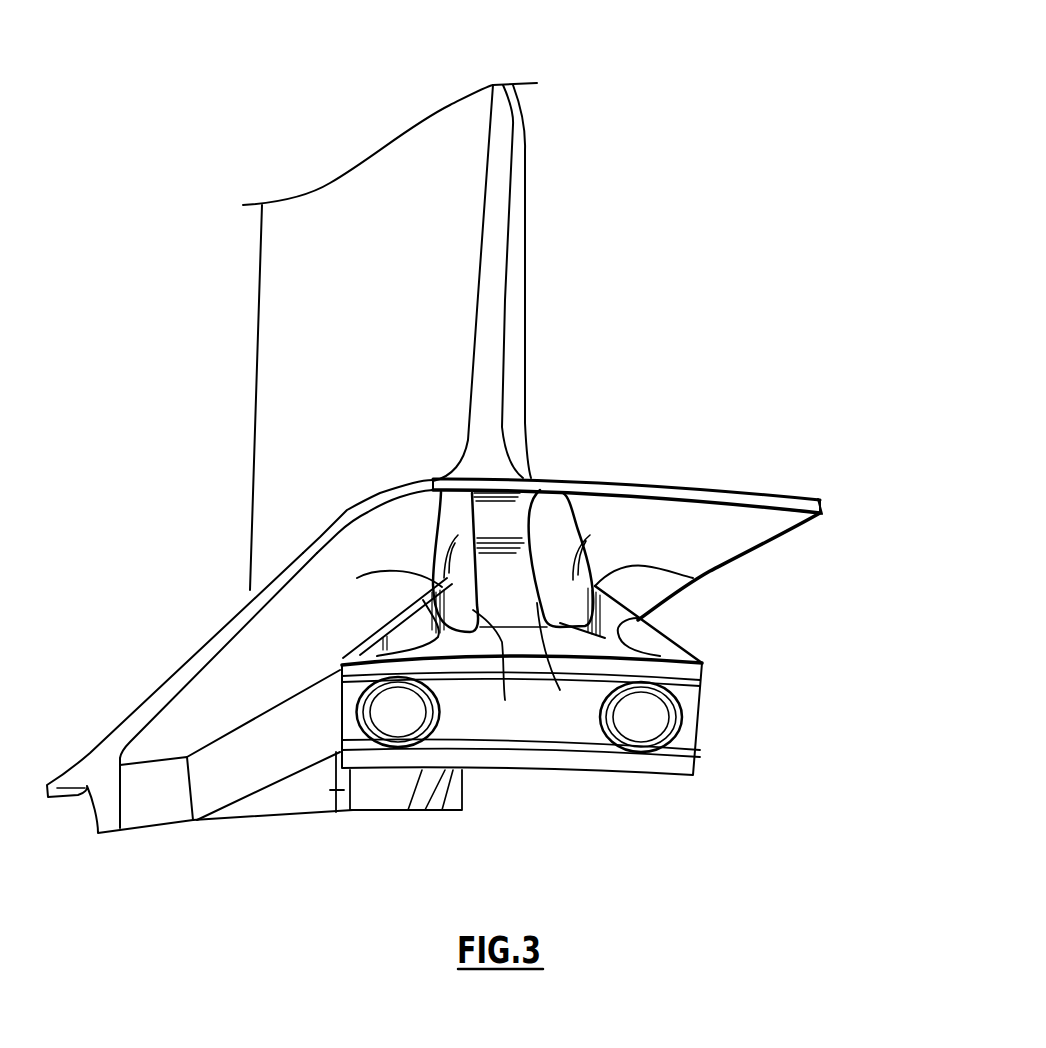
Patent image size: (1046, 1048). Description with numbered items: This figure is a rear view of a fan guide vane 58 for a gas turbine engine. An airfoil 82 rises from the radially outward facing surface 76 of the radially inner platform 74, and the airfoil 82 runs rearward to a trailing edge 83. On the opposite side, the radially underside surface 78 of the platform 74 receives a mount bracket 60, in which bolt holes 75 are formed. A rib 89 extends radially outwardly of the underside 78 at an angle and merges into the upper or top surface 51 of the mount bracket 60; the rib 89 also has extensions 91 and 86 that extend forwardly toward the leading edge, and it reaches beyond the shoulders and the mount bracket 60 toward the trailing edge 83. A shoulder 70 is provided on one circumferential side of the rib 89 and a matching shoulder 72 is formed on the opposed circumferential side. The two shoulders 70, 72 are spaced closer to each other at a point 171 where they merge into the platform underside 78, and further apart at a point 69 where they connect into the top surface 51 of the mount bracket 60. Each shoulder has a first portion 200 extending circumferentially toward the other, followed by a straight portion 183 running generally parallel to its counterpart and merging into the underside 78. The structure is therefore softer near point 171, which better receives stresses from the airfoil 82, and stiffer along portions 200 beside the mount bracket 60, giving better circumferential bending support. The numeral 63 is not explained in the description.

The fan guide vane 58 is at (765, 42).
The rotor blade 63 is at (612, 404).
The airfoil 82 is at (362, 295).
The trailing edge 83 is at (492, 236).
The radially outward facing surface 76 is at (805, 497).
The radially inner platform 74 is at (823, 508).
The radially underside surface 78 is at (801, 514).
The rib 89 is at (513, 552).
The point 171 is at (447, 507).
The top surface 51 is at (527, 633).
The straight portion 183 is at (516, 659).
The shoulder 72 is at (357, 578).
The first portion 200 is at (407, 630).
The point 69 is at (345, 660).
The shoulder 70 is at (693, 578).
The mount bracket 60 is at (530, 763).
The bolt holes 75 is at (386, 727).
The extension 91 is at (267, 757).
The extension 86 is at (335, 790).